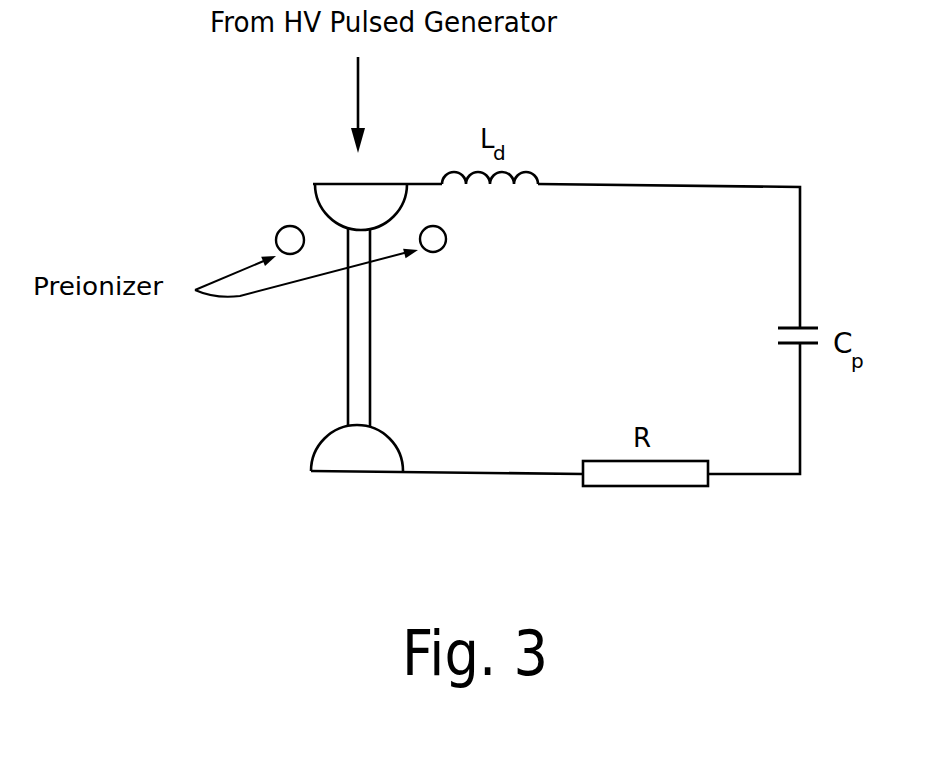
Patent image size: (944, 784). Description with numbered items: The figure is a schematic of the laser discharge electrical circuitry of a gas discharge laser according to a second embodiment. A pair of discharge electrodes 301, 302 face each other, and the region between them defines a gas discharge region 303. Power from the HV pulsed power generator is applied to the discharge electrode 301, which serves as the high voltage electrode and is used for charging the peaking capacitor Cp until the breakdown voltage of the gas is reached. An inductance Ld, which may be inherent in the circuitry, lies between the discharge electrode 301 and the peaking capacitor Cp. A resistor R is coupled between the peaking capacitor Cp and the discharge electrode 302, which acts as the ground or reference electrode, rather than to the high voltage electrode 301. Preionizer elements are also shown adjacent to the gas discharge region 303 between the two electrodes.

The discharge electrode 301 is at (317, 203).
The discharge electrode 302 is at (310, 450).
The gas discharge region 303 is at (347, 362).